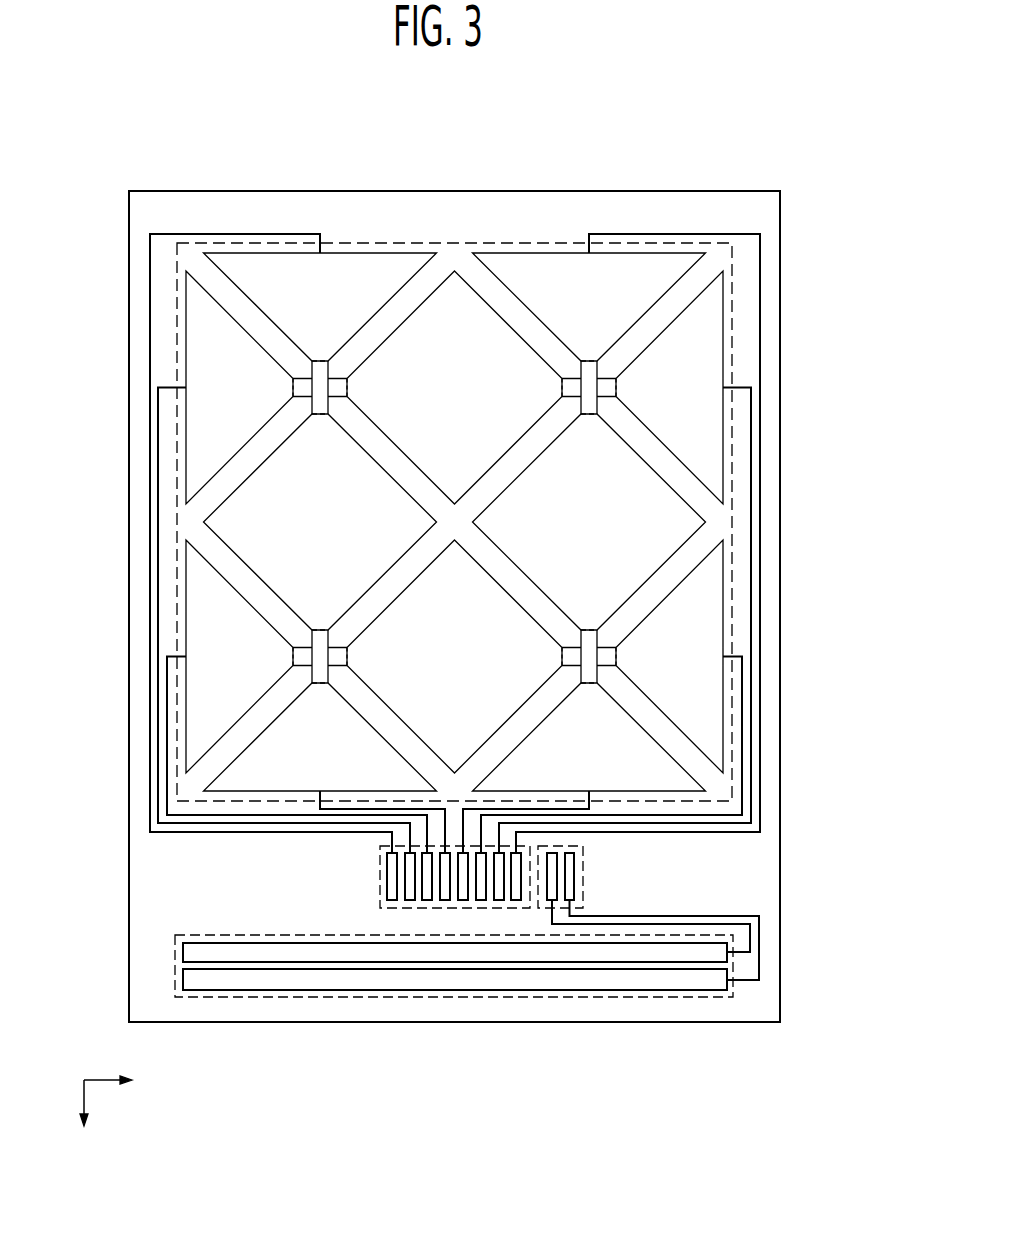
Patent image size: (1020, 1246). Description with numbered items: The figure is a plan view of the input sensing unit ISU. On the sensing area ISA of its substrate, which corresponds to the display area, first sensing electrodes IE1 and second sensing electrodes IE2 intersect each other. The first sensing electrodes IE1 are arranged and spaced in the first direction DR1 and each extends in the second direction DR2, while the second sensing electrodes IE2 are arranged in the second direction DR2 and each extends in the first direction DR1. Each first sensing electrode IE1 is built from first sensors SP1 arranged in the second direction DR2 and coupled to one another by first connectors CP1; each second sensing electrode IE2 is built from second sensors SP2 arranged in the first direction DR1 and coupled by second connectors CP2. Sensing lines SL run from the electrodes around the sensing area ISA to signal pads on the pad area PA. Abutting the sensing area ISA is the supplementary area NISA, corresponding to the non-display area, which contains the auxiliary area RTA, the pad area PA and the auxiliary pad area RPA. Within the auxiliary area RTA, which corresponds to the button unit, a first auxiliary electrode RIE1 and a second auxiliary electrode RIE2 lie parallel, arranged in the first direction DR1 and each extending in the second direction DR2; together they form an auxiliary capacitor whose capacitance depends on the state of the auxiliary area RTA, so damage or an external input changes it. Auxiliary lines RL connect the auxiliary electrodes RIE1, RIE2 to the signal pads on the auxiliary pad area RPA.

The input sensing unit ISU is at (826, 134).
The sensing area ISA is at (559, 243).
The supplementary area NISA is at (710, 219).
The first sensing electrode IE1 is at (185, 423).
The second sensing electrode IE2 is at (371, 252).
The first sensor SP1 is at (457, 287).
The second sensor SP2 is at (218, 519).
The first connector CP1 is at (298, 390).
The second connector CP2 is at (311, 360).
The sensing line SL is at (150, 798).
The pad area PA is at (380, 884).
The auxiliary pad area RPA is at (583, 877).
The auxiliary line RL is at (760, 949).
The auxiliary area RTA is at (455, 998).
The first auxiliary electrode RIE1 is at (183, 951).
The second auxiliary electrode RIE2 is at (183, 979).
The first direction DR1 is at (84, 1119).
The second direction DR2 is at (128, 1080).